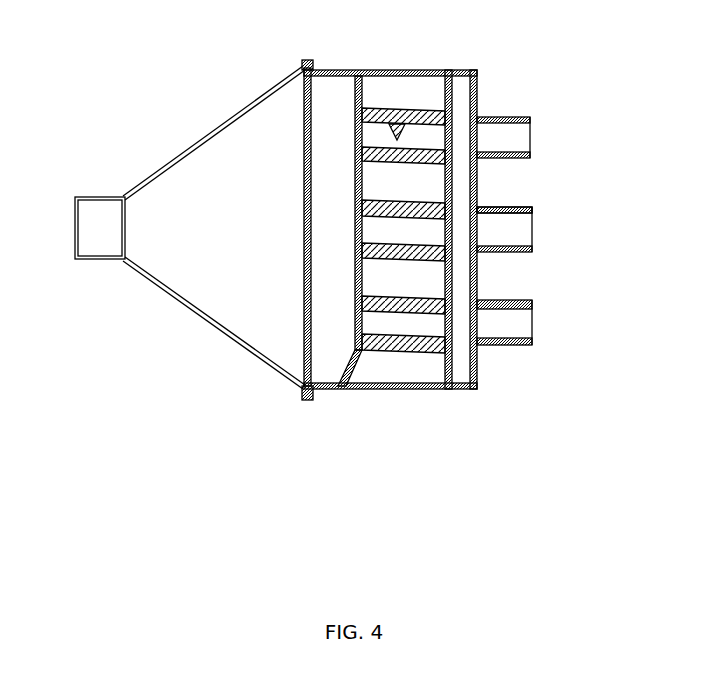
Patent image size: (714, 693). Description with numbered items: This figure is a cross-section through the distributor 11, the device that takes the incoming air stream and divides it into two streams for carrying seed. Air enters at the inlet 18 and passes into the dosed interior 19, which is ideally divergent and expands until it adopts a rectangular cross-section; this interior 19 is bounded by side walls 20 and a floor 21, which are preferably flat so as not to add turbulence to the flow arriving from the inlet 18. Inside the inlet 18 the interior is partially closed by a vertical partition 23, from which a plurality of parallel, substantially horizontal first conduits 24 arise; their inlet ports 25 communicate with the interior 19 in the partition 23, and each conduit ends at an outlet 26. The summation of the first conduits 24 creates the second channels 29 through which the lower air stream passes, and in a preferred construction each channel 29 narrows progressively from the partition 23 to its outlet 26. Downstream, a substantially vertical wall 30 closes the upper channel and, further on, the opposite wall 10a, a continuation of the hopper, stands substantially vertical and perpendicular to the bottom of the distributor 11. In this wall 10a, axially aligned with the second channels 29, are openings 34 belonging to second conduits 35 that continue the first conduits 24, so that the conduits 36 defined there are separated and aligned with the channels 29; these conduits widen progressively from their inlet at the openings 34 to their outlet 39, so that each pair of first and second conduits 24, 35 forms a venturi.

The opposite wall 10a is at (477, 182).
The distributor 11 is at (226, 80).
The inlet 18 is at (90, 232).
The interior 19 is at (162, 254).
The side walls 20 is at (183, 150).
The floor 21 is at (264, 293).
The vertical partition 23 is at (355, 180).
The first conduits 24 is at (423, 352).
The inlet ports 25 is at (355, 120).
The outlet 26 is at (450, 127).
The second channels 29 is at (396, 130).
The vertical wall 30 is at (450, 278).
The openings 34 is at (472, 125).
The second conduits 35 is at (507, 345).
The conduits 36 is at (514, 230).
The outlet 39 is at (532, 212).